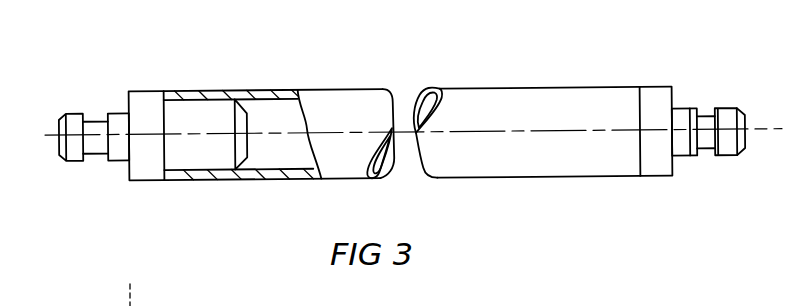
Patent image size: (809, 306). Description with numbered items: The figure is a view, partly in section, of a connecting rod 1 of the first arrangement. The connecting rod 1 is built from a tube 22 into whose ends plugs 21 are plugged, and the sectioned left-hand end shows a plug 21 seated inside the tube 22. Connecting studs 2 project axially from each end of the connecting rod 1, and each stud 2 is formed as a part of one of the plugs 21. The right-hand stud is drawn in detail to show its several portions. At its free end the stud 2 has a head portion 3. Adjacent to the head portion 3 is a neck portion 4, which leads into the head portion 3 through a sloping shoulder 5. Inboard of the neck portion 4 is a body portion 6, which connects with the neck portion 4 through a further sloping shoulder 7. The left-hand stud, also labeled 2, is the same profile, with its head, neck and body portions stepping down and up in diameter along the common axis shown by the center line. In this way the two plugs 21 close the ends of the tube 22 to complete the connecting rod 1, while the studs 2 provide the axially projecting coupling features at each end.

The connecting rod 1 is at (190, 178).
The connecting stud 2 is at (72, 110).
The head portion 3 is at (733, 148).
The neck portion 4 is at (707, 141).
The sloping shoulder 5 is at (715, 157).
The body portion 6 is at (682, 150).
The sloping shoulder 7 is at (698, 110).
The plug 21 is at (147, 88).
The tube 22 is at (240, 95).